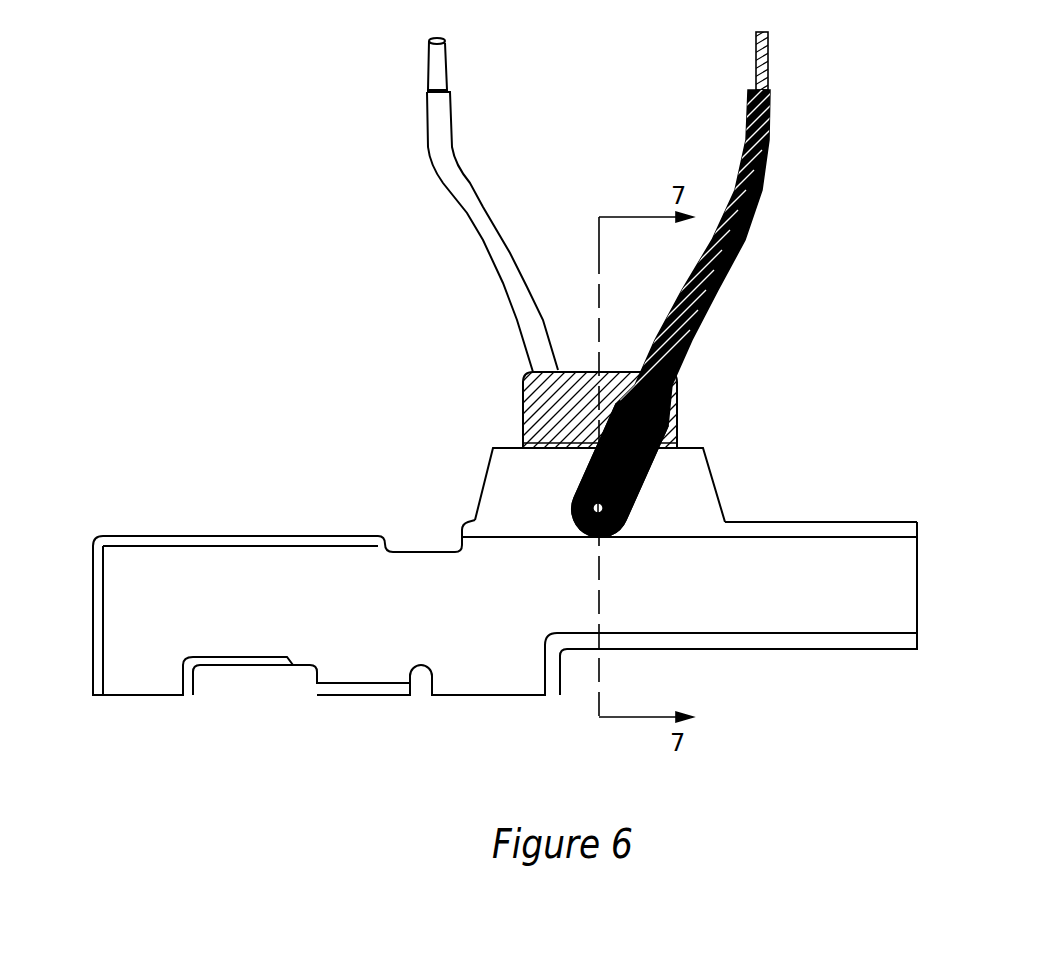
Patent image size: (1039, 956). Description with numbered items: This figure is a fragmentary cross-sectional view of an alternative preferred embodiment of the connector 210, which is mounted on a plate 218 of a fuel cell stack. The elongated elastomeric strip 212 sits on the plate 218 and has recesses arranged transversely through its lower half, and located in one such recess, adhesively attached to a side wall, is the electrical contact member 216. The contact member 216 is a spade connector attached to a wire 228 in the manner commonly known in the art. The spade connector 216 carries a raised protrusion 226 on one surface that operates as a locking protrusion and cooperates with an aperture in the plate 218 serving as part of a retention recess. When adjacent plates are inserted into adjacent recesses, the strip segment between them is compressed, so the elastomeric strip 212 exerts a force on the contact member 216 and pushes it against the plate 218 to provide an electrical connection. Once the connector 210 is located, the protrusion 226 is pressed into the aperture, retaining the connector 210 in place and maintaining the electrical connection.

The connector 210 is at (817, 283).
The elongated elastomeric strip 212 is at (522, 375).
The electrical contact member 216 is at (653, 447).
The plate 218 is at (687, 482).
The raised protrusion 226 is at (573, 502).
The wire 228 is at (765, 72).